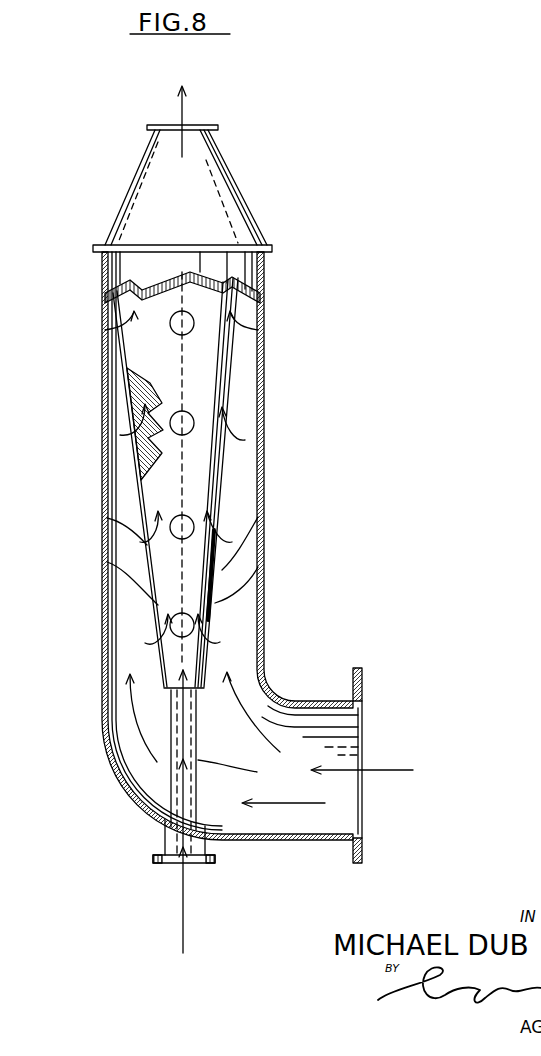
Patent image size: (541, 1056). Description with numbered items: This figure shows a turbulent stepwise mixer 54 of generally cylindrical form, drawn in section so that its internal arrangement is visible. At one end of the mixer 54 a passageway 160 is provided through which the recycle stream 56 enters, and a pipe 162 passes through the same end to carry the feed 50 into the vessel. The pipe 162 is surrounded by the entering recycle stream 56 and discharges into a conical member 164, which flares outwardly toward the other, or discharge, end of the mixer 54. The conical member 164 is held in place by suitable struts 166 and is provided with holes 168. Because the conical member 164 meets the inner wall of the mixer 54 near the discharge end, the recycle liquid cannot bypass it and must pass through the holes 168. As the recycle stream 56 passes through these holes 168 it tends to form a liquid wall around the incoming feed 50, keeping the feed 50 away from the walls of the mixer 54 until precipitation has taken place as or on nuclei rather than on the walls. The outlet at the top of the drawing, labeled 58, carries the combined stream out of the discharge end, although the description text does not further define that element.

The feed 50 is at (182, 918).
The turbulent stepwise mixer 54 is at (263, 465).
The recycle stream 56 is at (392, 770).
The outlet cone 58 is at (182, 108).
The passageway 160 is at (280, 692).
The pipe 162 is at (173, 777).
The conical member 164 is at (230, 486).
The struts 166 is at (228, 570).
The holes 168 is at (192, 414).